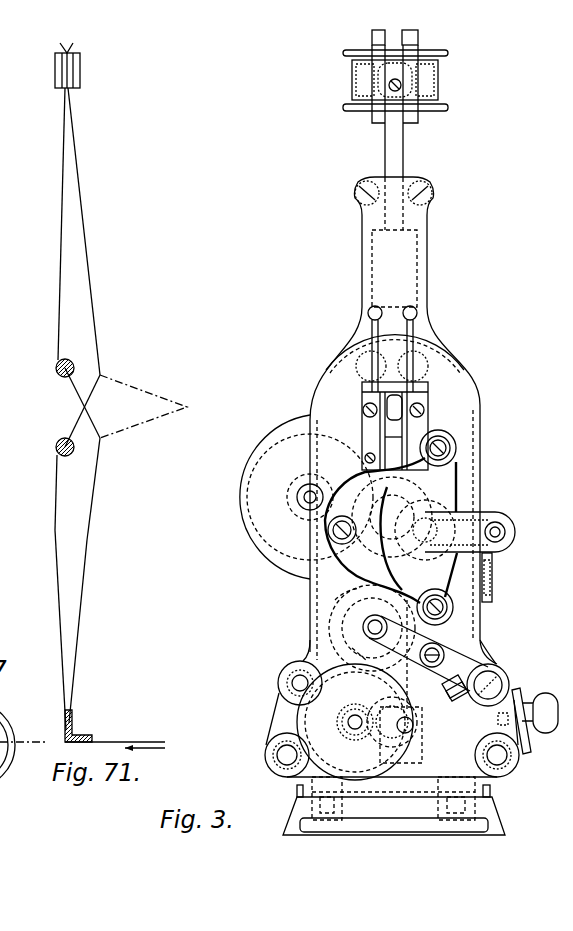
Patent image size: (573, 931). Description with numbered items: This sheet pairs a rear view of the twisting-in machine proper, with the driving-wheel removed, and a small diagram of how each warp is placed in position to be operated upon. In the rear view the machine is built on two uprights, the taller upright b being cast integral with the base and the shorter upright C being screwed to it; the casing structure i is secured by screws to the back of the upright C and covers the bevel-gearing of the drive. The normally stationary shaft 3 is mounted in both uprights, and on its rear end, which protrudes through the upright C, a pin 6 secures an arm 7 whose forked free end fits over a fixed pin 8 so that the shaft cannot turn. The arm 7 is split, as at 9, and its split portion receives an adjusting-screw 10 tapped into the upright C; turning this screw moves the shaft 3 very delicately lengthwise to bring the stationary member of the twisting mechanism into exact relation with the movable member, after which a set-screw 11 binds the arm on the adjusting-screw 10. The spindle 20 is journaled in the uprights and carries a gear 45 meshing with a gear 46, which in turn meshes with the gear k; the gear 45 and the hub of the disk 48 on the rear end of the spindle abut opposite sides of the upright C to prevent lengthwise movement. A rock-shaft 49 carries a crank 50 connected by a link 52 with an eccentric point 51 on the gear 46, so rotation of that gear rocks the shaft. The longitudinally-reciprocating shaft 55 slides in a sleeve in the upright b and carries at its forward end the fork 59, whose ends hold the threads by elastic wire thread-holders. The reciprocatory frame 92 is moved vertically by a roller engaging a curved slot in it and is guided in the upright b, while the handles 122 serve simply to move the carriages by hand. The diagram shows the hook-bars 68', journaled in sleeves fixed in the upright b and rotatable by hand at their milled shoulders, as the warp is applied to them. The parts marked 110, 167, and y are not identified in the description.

In FIG. 3, the clamp frame 110 is at (374, 40).
In FIG. 3, the handles 122 is at (350, 112).
In FIG. 3, the reciprocatory frame 92 is at (404, 160).
In FIG. 3, the upright b is at (362, 294).
In FIG. 3, the upright C is at (470, 444).
In FIG. 3, the casing structure i is at (418, 538).
In FIG. 3, the bracket y is at (491, 578).
In FIG. 3, the gear k is at (366, 557).
In FIG. 3, the gear 46 is at (340, 616).
In FIG. 3, the eccentric point 51 is at (347, 601).
In FIG. 3, the fixed pin 8 is at (368, 628).
In FIG. 3, the crank 50 is at (309, 648).
In FIG. 3, the rock-shaft 49 is at (308, 654).
In FIG. 3, the link 52 is at (357, 652).
In FIG. 3, the adjusting-screw 10 is at (432, 651).
In FIG. 3, the split portion of arm 9 is at (445, 697).
In FIG. 3, the set-screw 11 is at (464, 697).
In FIG. 3, the arm 7 is at (492, 664).
In FIG. 3, the pin 6 is at (492, 682).
In FIG. 3, the normally stationary shaft 3 is at (496, 686).
In FIG. 3, the gear 45 is at (322, 720).
In FIG. 3, the spindle 20 is at (356, 729).
In FIG. 3, the longitudinally-reciprocating shaft 55 is at (392, 722).
In FIG. 3, the stud 167 is at (409, 726).
In FIG. 3, the disk 48 is at (394, 806).
In FIG. 71, the hook-bars 68' is at (45, 408).
In FIG. 71, the fork 59 is at (72, 718).